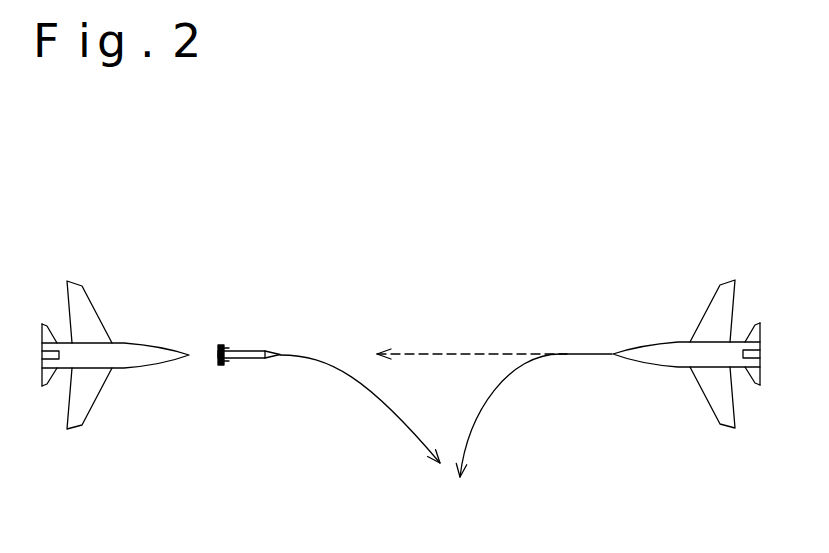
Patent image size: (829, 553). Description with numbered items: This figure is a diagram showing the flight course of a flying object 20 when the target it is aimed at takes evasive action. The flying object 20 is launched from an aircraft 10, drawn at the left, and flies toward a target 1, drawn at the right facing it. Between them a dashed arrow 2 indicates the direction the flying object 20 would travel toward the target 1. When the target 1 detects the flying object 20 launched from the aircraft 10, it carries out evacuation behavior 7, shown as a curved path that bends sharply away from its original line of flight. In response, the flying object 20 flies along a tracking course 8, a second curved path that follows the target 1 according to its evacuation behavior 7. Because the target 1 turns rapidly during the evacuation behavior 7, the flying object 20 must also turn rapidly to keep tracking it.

The target 1 is at (658, 341).
The aircraft 10 is at (93, 294).
The flying object 20 is at (236, 362).
The flight direction of missile 2 is at (472, 352).
The evacuation behavior 7 is at (495, 399).
The tracking course 8 is at (383, 397).